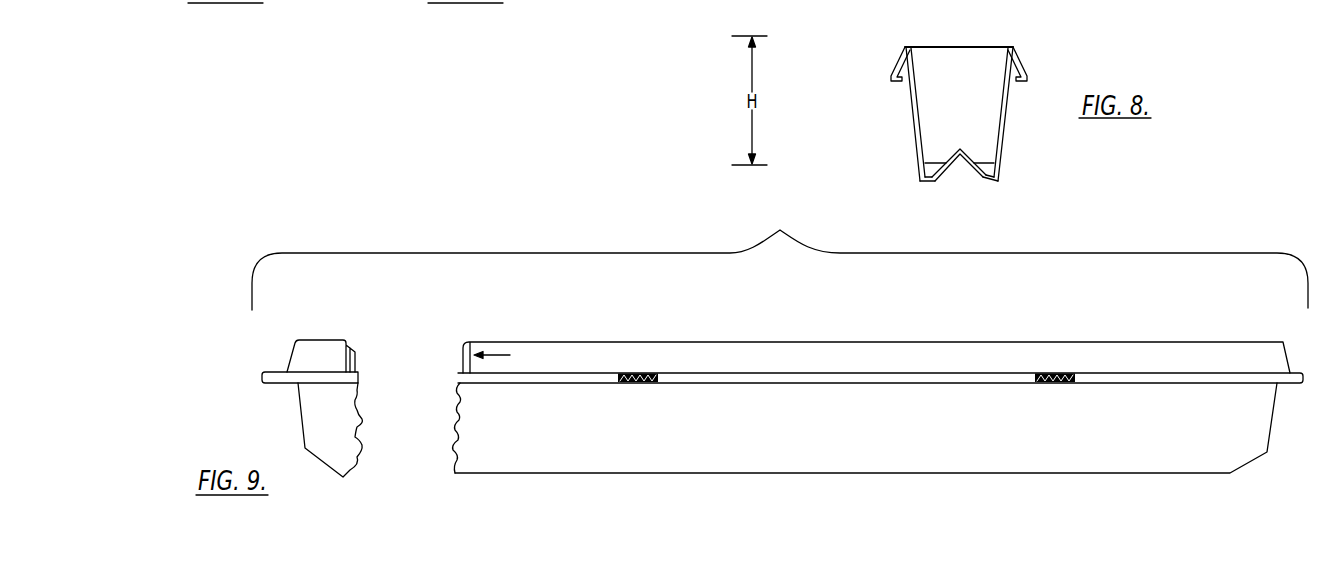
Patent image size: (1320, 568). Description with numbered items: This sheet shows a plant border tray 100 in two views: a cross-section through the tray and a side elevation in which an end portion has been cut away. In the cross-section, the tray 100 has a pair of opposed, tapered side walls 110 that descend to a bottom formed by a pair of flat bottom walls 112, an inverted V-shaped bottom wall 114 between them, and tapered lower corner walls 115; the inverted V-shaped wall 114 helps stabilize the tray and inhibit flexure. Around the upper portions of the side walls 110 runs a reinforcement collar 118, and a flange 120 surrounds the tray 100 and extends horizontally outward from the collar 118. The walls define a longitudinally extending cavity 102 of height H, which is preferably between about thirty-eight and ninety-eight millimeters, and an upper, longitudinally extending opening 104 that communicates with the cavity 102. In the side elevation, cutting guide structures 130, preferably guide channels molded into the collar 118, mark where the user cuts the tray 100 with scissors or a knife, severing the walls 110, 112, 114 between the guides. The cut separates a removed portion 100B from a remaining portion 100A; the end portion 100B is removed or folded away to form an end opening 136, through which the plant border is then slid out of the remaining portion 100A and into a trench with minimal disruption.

In FIG. 8, the tray 100 is at (941, 124).
In FIG. 9, the tray 100 is at (860, 387).
In FIG. 9, the remaining portion 100A is at (847, 444).
In FIG. 9, the removed portion 100B is at (325, 347).
In FIG. 8, the cavity 102 is at (973, 111).
In FIG. 8, the opening 104 is at (971, 41).
In FIG. 8, the side walls 110 is at (914, 136).
In FIG. 8, the bottom walls 112 is at (928, 183).
In FIG. 8, the inverted V-shaped bottom wall 114 is at (968, 176).
In FIG. 8, the tapered lower corner walls 115 is at (1203, 11).
In FIG. 8, the reinforcement collar 118 is at (1022, 58).
In FIG. 8, the flange 120 is at (896, 72).
In FIG. 9, the cutting guide structures 130 is at (457, 352).
In FIG. 9, the end opening 136 is at (436, 399).